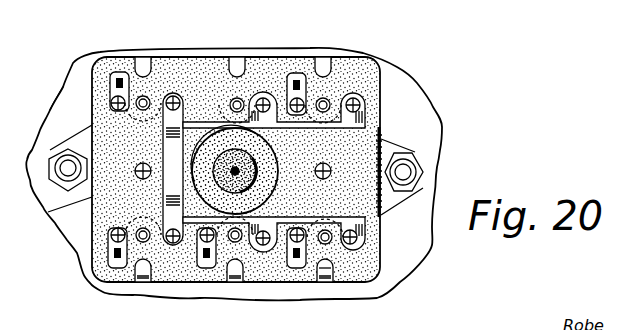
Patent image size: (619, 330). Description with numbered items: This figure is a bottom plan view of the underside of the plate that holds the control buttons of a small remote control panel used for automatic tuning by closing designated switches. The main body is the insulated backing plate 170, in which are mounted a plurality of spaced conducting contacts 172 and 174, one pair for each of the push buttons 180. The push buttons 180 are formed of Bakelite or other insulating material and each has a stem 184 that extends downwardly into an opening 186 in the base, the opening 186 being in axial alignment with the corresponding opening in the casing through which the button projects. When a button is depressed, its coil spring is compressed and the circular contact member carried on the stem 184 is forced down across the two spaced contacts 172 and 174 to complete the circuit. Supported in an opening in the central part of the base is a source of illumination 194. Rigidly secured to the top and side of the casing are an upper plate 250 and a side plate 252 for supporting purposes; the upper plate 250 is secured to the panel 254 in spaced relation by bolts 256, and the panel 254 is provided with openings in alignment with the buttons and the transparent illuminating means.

The insulated backing plate 170 is at (366, 246).
The conducting contact 172 is at (177, 96).
The conducting contact 174 is at (113, 100).
The push button 180 is at (259, 97).
The stem 184 is at (143, 96).
The opening 186 is at (322, 272).
The source of illumination 194 is at (272, 181).
The upper plate 250 is at (43, 210).
The side plate 252 is at (383, 138).
The panel 254 is at (72, 87).
The bolt 256 is at (70, 158).